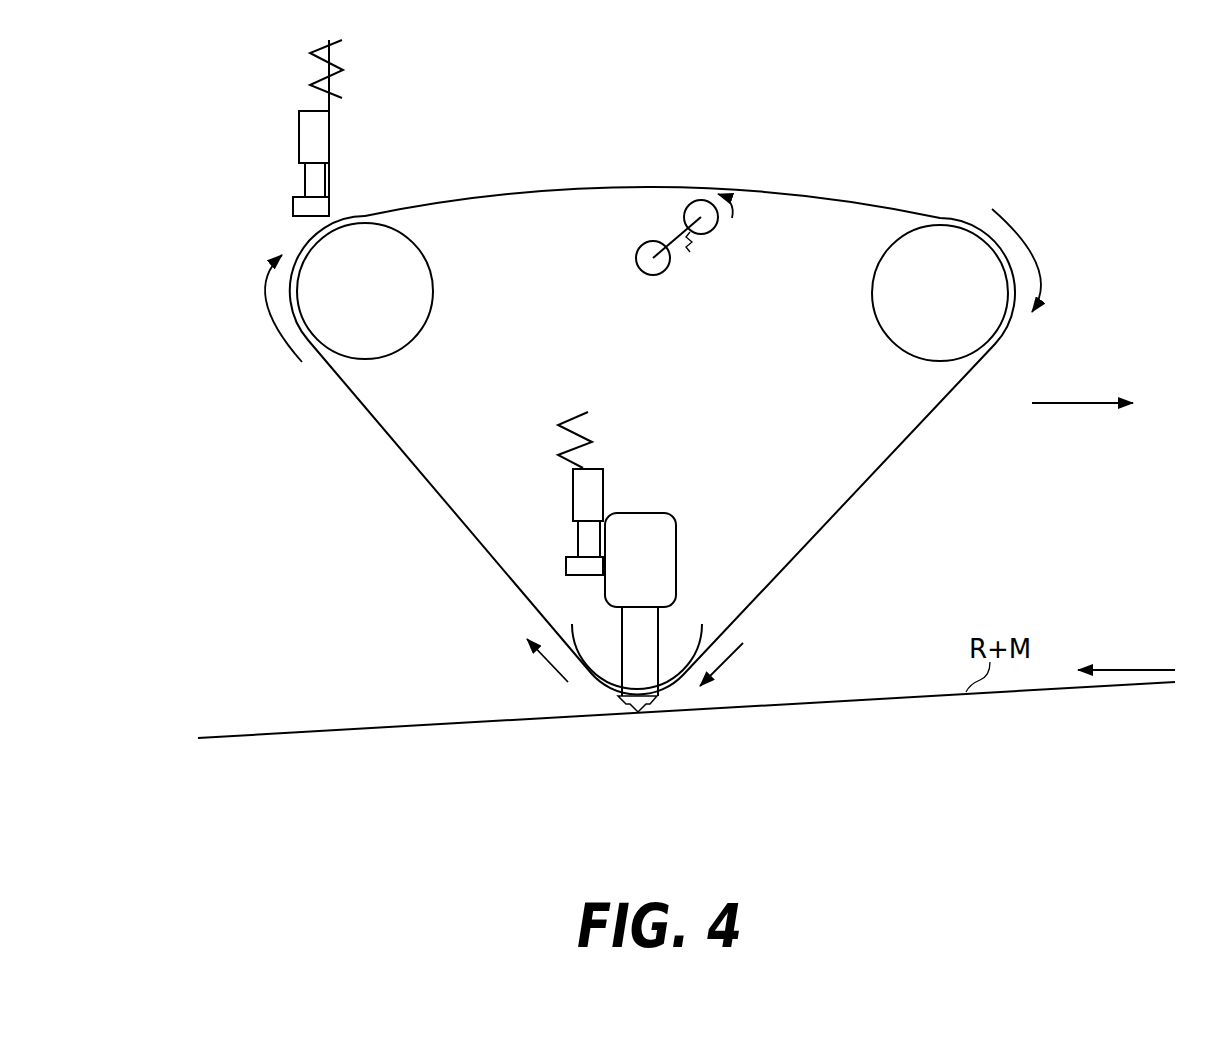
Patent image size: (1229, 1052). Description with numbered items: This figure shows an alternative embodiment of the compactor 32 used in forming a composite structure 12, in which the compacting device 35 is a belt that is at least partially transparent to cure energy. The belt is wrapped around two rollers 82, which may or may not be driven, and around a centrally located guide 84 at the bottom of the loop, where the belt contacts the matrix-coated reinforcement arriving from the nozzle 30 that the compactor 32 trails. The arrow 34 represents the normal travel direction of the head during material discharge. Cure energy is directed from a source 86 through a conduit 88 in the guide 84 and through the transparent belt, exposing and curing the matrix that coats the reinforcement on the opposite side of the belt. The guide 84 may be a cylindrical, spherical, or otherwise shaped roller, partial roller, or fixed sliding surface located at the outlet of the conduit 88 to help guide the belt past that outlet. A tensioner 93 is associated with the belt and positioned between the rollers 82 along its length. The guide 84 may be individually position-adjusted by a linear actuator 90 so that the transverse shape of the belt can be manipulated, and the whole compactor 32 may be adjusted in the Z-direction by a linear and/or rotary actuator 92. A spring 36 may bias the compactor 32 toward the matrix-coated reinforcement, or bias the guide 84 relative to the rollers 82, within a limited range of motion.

The composite structure 12 is at (289, 730).
The nozzle 30 is at (1135, 671).
The compactor 32 is at (199, 524).
The arrow 34 is at (1058, 404).
The compacting device 35 is at (826, 530).
The spring 36 is at (332, 94).
The rollers 82 is at (376, 305).
The guide 84 is at (612, 654).
The source 86 is at (654, 576).
The conduit 88 is at (651, 679).
The linear actuators 90 is at (582, 585).
The linear and/or rotary actuator 92 is at (411, 254).
The tensioner 93 is at (612, 230).